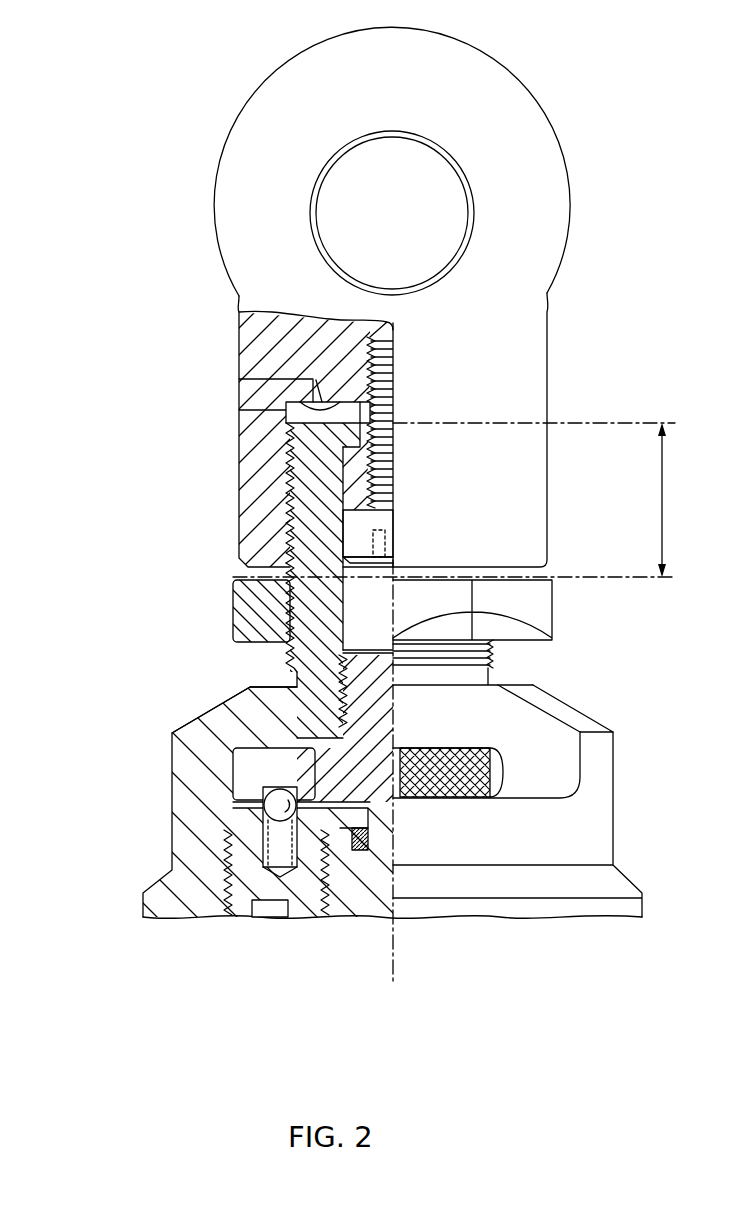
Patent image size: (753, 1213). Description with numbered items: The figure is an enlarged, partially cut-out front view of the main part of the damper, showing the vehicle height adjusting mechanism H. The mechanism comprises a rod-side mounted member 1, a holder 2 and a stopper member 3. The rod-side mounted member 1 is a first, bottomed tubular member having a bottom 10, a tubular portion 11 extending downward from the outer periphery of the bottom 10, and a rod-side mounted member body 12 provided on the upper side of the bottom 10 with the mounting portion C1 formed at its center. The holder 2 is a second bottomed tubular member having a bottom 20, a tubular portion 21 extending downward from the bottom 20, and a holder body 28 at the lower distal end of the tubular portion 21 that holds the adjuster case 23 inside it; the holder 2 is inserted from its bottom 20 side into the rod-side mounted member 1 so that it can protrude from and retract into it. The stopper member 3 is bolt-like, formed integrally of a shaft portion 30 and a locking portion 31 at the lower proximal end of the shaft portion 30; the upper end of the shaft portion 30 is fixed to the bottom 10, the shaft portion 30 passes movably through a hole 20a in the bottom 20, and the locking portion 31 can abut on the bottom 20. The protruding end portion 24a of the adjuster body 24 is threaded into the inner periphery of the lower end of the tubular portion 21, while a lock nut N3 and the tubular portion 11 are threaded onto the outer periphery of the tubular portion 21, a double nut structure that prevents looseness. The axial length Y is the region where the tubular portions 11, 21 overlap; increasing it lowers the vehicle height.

The rod-side mounted member 1 is at (214, 184).
The vehicle height adjusting mechanism H is at (586, 221).
The rod-side mounted member body 12 is at (218, 245).
The mounting portion C1 is at (328, 160).
The tubular portion 11 is at (239, 492).
The shaft portion 30 is at (367, 352).
The stopper member 3 is at (404, 367).
The locking portion 31 is at (343, 527).
The bottom 10 is at (290, 405).
The bottom 20 is at (343, 460).
The hole 20a is at (393, 430).
The tubular portion 21 is at (290, 550).
The lock nut N3 is at (233, 622).
The protruding end portion 24a is at (400, 618).
The adjuster body 24 is at (403, 716).
The holder 2 is at (168, 805).
The holder body 28 is at (172, 750).
The adjuster case 23 is at (368, 786).
The axial length Y is at (458, 704).